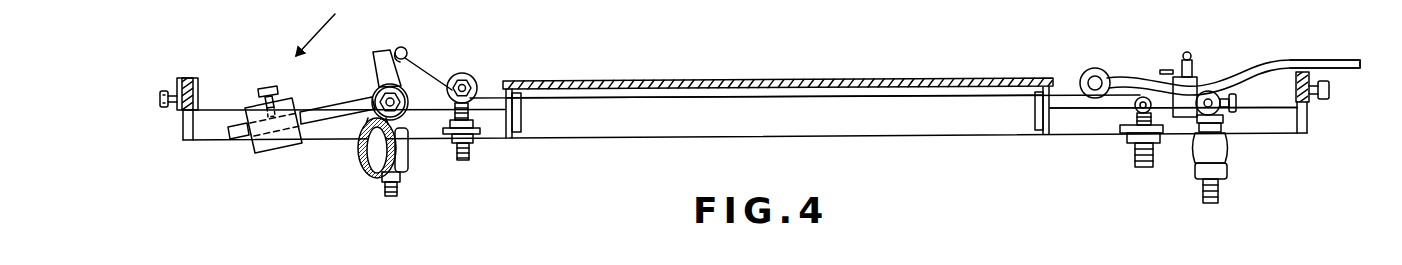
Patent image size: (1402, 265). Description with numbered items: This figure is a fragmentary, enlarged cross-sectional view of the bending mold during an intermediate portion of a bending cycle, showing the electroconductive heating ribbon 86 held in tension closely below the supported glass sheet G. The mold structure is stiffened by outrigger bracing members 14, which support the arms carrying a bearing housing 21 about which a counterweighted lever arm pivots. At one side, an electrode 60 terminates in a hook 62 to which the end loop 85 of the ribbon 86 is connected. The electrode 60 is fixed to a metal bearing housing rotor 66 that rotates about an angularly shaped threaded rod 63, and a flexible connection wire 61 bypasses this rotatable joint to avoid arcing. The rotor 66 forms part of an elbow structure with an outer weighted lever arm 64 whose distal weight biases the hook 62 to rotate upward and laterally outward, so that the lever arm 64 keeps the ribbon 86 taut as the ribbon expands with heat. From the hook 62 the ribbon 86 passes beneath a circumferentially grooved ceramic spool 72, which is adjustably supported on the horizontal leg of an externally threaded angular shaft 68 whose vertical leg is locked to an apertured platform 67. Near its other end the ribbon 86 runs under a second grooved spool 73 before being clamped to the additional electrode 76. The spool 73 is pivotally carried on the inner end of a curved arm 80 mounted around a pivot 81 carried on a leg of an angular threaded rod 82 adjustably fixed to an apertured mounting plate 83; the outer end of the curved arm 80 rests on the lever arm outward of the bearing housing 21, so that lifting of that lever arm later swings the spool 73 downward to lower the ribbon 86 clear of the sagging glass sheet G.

The outrigger bracing member 14 is at (407, 160).
The bearing housing 21 is at (1322, 74).
The electrode 60 is at (376, 58).
The flexible connection wire 61 is at (362, 167).
The hook 62 is at (404, 48).
The angularly shaped threaded rod 63 is at (391, 197).
The weighted lever arm 64 is at (311, 112).
The bearing housing rotor 66 is at (372, 92).
The apertured platform 67 is at (482, 134).
The externally threaded angular shaft 68 is at (463, 161).
The circumferentially grooved spool 72 is at (467, 72).
The circumferentially grooved spool 73 is at (1097, 71).
The additional electrode 76 is at (1187, 112).
The curved arm 80 is at (1282, 59).
The pivot 81 is at (1135, 112).
The angular externally threaded rod 82 is at (1130, 168).
The apertured mounting plate 83 is at (1119, 134).
The end loop 85 is at (420, 54).
The electroconductive ribbon 86 is at (807, 99).
The glass sheet G is at (754, 70).